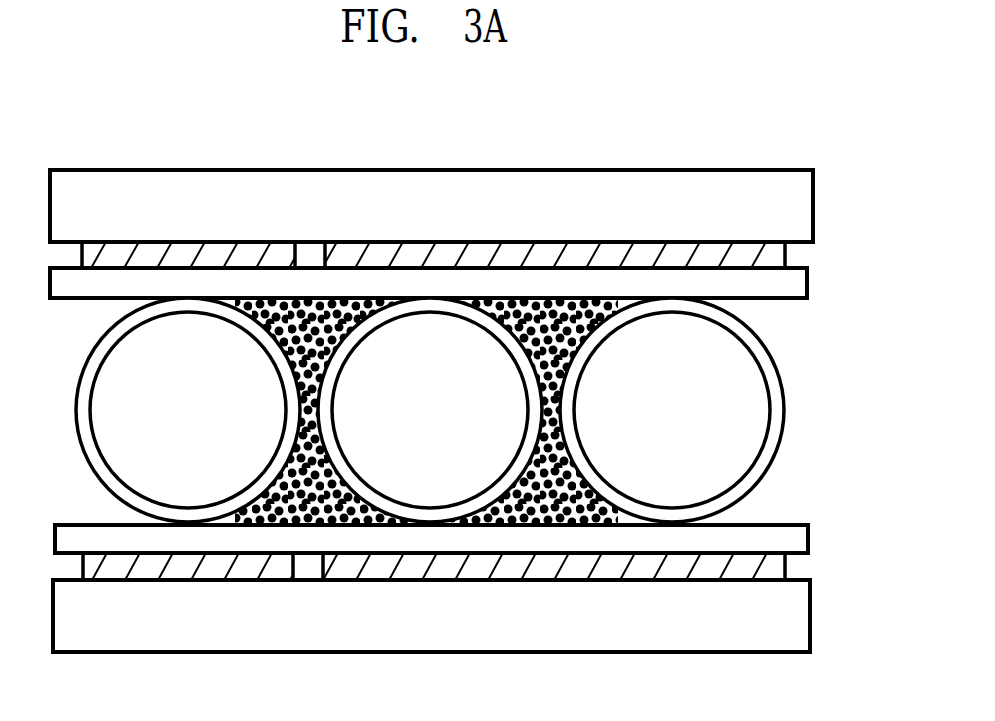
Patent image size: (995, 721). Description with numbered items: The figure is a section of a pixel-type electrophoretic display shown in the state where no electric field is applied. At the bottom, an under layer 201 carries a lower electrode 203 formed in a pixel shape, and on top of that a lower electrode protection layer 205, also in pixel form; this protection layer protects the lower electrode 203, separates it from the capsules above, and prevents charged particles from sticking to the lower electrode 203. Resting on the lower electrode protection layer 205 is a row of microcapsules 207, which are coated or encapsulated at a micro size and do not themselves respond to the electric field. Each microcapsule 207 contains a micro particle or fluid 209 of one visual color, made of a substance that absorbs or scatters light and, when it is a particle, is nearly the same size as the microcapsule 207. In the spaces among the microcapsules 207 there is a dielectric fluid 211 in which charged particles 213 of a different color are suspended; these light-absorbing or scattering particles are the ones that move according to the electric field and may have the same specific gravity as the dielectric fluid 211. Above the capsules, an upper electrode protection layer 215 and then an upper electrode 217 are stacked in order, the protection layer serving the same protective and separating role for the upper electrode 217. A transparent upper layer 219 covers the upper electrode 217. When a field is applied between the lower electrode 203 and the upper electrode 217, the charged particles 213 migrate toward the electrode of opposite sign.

The under layer 201 is at (785, 623).
The lower electrode 203 is at (770, 568).
The lower electrode protection layer 205 is at (785, 540).
The microcapsule 207 is at (778, 423).
The micro particle or fluid 209 is at (753, 388).
The dielectric fluid 211 is at (312, 330).
The charged particle 213 is at (287, 517).
The upper electrode protection layer 215 is at (787, 288).
The upper electrode 217 is at (772, 257).
The transparent upper layer 219 is at (787, 202).